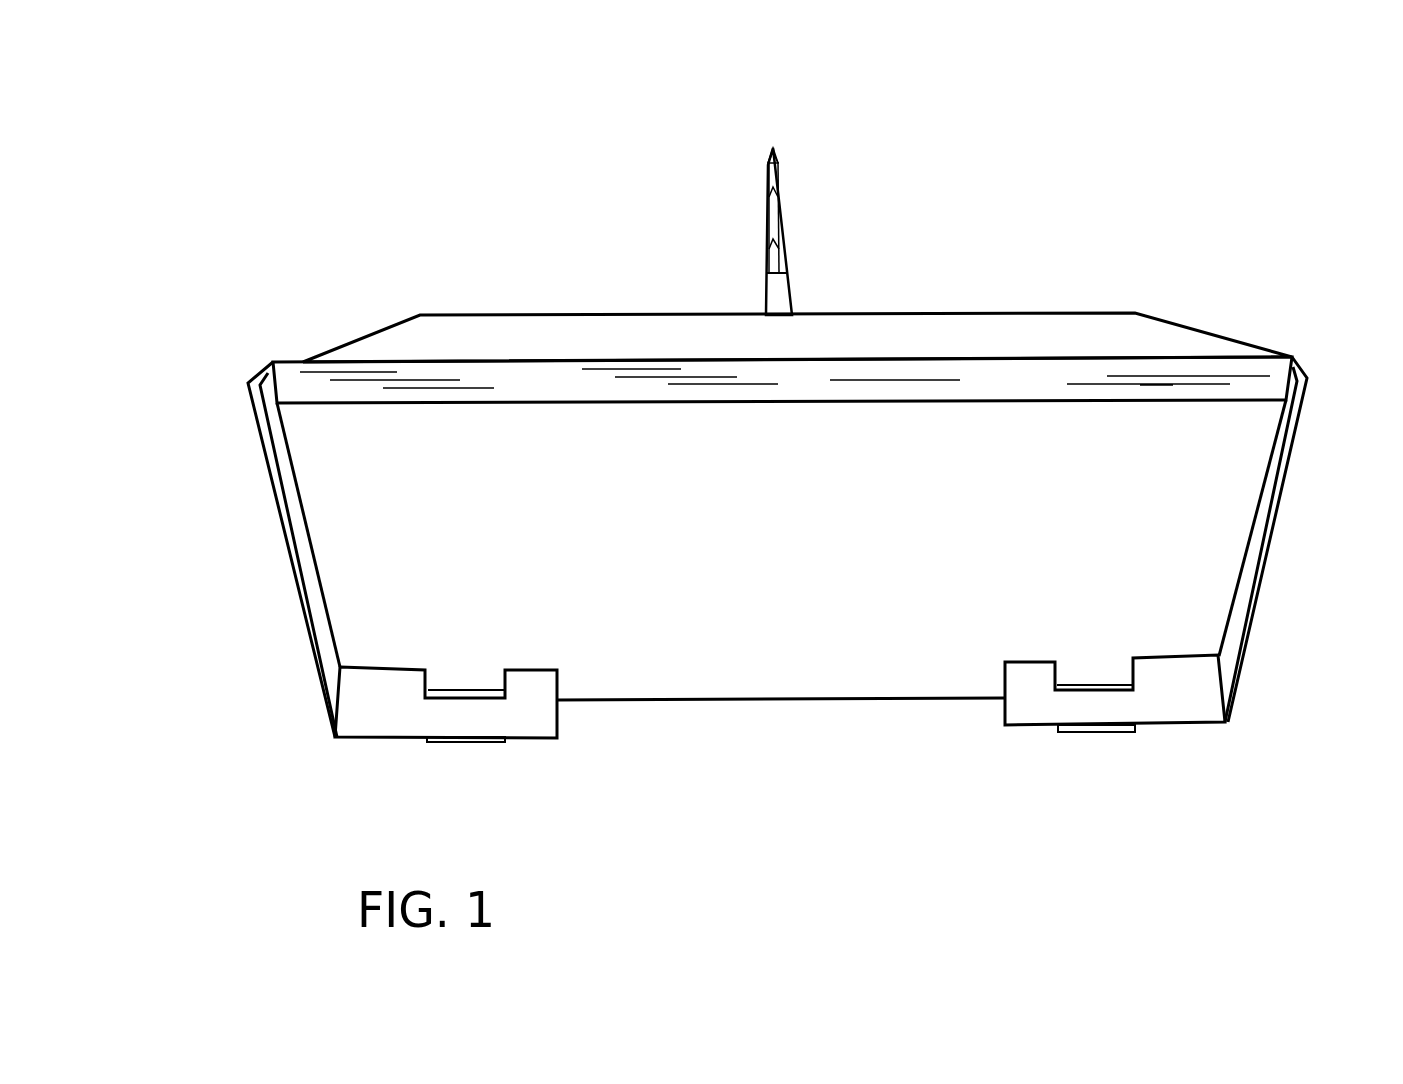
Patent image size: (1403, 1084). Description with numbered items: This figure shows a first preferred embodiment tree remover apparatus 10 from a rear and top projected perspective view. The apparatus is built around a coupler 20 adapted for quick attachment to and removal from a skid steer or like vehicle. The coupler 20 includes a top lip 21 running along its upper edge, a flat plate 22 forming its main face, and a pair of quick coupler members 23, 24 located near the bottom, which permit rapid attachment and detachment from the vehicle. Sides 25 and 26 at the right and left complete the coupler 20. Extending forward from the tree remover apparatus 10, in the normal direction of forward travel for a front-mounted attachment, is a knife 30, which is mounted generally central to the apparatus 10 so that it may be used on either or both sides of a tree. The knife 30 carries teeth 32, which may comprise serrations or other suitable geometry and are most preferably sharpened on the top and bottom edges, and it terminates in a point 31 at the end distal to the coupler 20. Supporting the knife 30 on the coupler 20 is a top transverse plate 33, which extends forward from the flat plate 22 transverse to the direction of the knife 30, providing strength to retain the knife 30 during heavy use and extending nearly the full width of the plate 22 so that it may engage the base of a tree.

The tree remover apparatus 10 is at (1093, 88).
The coupler 20 is at (794, 528).
The top lip 21 is at (1272, 363).
The flat plate 22 is at (1222, 557).
The quick coupler member 23 is at (1193, 710).
The quick coupler member 24 is at (533, 710).
The side 25 is at (1245, 637).
The side 26 is at (307, 550).
The knife 30 is at (775, 208).
The point 31 is at (775, 153).
The teeth 32 is at (771, 255).
The top transverse plate 33 is at (392, 345).